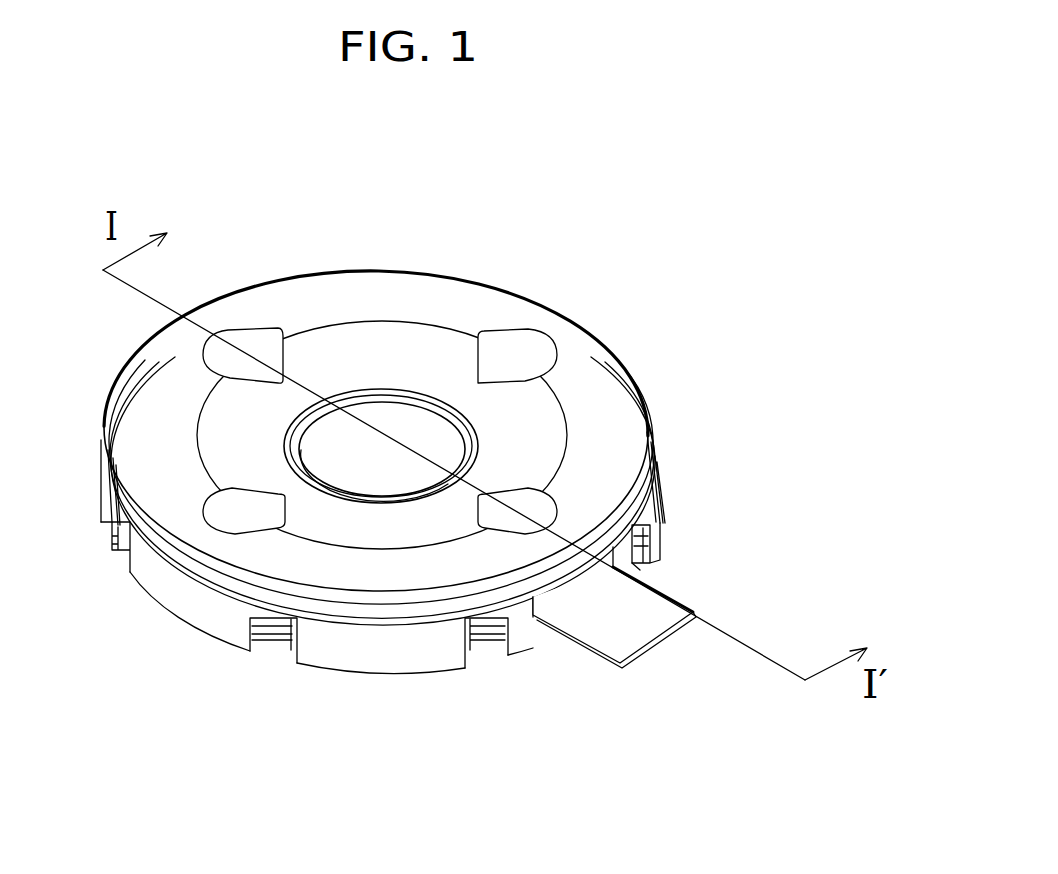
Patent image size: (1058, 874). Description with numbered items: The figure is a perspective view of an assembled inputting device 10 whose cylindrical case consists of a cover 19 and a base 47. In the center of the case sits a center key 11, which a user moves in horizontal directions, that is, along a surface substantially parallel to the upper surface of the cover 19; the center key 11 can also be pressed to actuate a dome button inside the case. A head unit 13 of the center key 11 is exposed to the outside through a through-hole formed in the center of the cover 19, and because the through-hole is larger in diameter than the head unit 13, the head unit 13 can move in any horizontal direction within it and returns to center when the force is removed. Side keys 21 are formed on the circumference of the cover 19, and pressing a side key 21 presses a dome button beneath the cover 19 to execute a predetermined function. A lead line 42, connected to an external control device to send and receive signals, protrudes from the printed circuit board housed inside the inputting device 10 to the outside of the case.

The inputting device 10 is at (443, 469).
The center key 11 is at (452, 437).
The head unit 13 is at (385, 412).
The cover 19 is at (480, 303).
The side key 21 is at (253, 338).
The lead line 42 is at (633, 638).
The base 47 is at (377, 655).